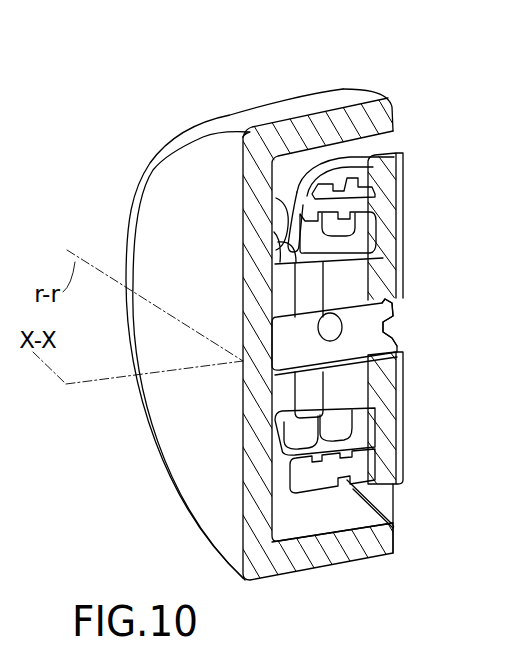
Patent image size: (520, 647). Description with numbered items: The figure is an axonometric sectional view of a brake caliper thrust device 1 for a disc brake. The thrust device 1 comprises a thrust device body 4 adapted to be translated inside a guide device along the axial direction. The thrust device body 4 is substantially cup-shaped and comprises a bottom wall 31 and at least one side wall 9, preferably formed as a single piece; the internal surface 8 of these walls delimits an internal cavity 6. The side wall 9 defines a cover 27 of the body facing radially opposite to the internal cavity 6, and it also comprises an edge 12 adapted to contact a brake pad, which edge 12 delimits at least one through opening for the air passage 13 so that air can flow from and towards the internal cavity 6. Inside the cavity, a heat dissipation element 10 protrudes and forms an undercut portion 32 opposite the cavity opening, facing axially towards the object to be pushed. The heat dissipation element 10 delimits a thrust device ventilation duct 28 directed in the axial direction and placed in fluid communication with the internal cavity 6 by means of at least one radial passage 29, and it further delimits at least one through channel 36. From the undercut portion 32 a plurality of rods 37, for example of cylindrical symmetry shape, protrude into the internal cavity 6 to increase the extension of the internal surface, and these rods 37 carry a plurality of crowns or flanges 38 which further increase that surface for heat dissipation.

The brake caliper thrust device 1 is at (169, 129).
The thrust device body 4 is at (262, 562).
The internal cavity 6 is at (366, 152).
The internal surface 8 is at (340, 532).
The side wall 9 is at (307, 150).
The heat dissipation element 10 is at (394, 153).
The edge 12 is at (386, 126).
The through opening for the air passage 13 is at (383, 502).
The cover 27 is at (266, 150).
The thrust device ventilation duct 28 is at (396, 348).
The radial passage 29 is at (327, 280).
The bottom wall 31 is at (240, 246).
The undercut portion 32 is at (403, 232).
The through channel 36 is at (390, 338).
The rods 37 is at (322, 402).
The crowns or flanges 38 is at (396, 532).